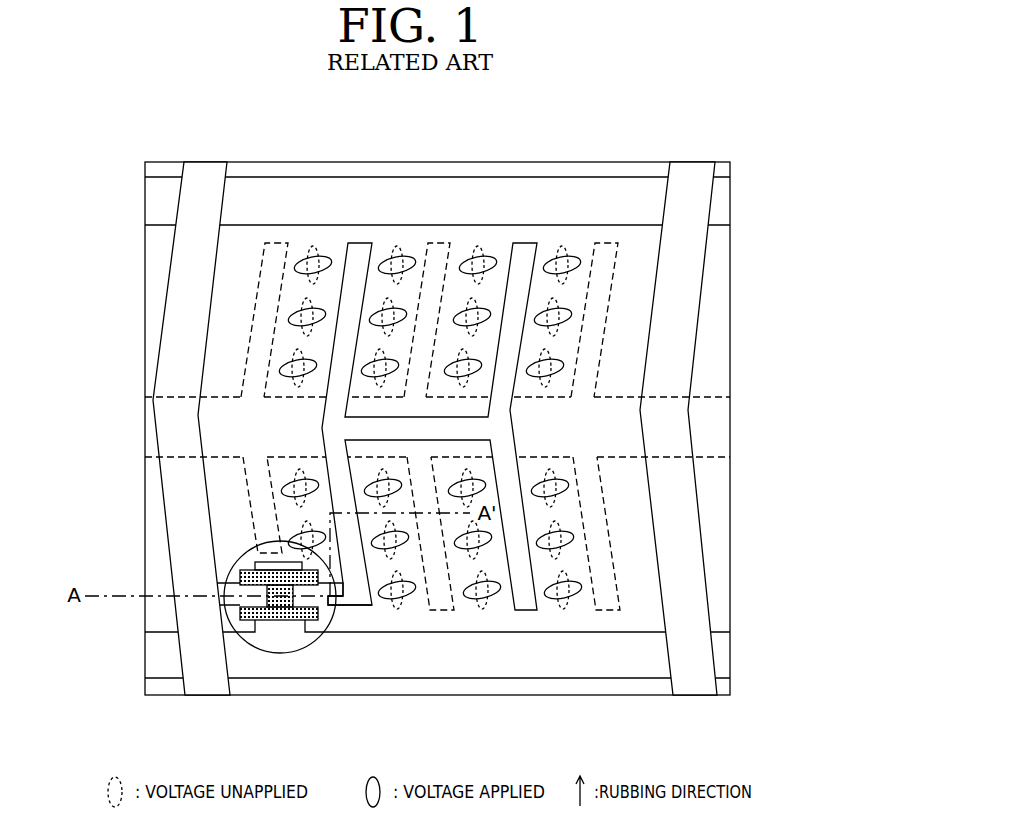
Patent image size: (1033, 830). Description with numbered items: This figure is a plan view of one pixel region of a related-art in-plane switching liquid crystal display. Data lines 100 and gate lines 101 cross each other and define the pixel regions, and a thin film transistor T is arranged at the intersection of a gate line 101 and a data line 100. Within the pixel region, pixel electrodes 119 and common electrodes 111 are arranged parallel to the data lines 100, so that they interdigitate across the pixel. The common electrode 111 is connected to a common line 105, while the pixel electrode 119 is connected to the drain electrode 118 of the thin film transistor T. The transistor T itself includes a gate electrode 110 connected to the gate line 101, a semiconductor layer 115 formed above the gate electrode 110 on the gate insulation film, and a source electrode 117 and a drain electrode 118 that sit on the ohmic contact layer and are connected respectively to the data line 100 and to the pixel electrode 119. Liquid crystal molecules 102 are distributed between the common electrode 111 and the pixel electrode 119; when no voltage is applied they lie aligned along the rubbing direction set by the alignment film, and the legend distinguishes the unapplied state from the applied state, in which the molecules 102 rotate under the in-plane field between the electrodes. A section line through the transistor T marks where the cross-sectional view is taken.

The data line 100 is at (183, 325).
The gate line 101 is at (465, 668).
The liquid crystal molecules 102 is at (563, 258).
The common line 105 is at (232, 430).
The gate electrode 110 is at (282, 622).
The common electrode 111 is at (440, 250).
The semiconductor layer 115 is at (278, 622).
The source electrode 117 is at (252, 582).
The drain electrode 118 is at (303, 615).
The pixel electrode 119 is at (360, 250).
The thin film transistor T is at (245, 553).